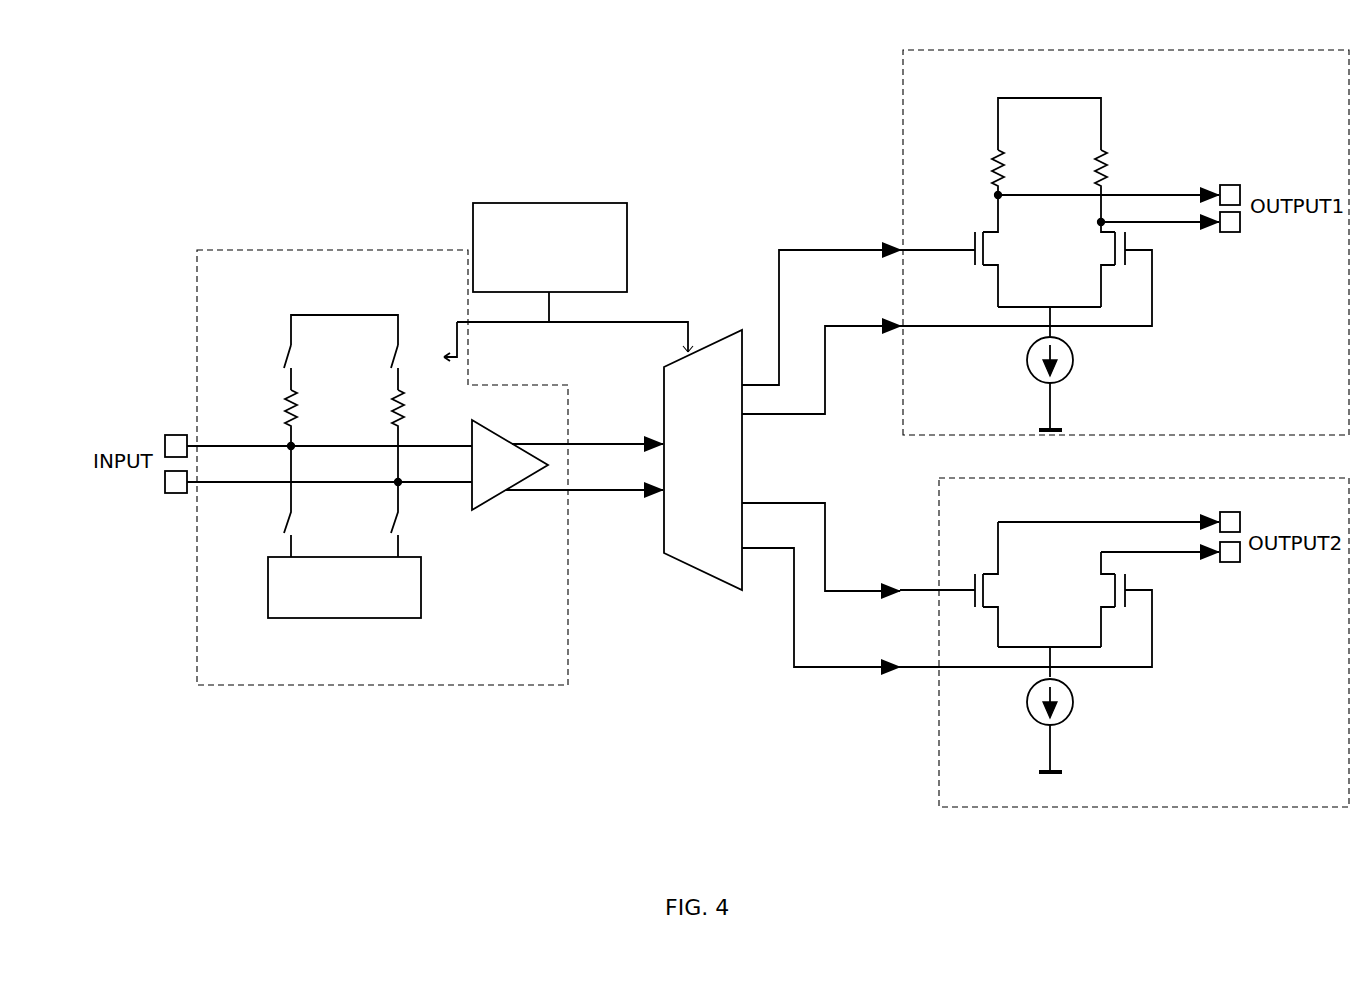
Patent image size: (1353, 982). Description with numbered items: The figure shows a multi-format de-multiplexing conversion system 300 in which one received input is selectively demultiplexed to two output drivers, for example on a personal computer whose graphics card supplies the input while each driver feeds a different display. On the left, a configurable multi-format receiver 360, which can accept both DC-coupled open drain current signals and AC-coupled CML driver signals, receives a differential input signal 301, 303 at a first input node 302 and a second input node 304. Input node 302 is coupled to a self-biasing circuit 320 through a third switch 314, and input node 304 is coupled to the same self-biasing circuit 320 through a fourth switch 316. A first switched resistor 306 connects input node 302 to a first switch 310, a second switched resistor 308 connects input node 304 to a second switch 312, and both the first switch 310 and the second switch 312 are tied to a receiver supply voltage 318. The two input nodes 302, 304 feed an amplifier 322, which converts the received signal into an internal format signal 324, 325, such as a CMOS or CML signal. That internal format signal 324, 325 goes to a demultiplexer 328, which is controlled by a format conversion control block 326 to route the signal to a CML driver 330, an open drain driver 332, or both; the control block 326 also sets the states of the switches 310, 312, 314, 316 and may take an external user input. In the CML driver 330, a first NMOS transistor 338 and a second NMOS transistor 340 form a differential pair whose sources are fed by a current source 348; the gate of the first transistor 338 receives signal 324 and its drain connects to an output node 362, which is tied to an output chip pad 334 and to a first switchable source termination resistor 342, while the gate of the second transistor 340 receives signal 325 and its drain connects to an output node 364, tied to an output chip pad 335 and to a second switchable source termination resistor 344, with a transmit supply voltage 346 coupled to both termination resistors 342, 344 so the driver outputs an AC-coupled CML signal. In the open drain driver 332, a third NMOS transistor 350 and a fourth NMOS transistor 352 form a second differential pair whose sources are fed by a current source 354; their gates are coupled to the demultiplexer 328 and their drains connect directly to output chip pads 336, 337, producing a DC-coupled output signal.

The multi-format de-multiplexing conversion system 300 is at (663, 46).
The differential input signal 301 is at (163, 447).
The first input node 302 is at (289, 444).
The differential input signal 303 is at (163, 477).
The second input node 304 is at (396, 480).
The switched resistor RT1 306 is at (314, 418).
The switched resistor RT2 308 is at (422, 436).
The switch S1 310 is at (313, 368).
The switch S2 312 is at (419, 368).
The switch S3 314 is at (313, 501).
The switch S4 316 is at (418, 519).
The supply voltage VRX 318 is at (350, 317).
The self-biasing circuit 320 is at (353, 618).
The amplifier 322 is at (510, 465).
The internal format signal 324 is at (706, 407).
The internal format signal 325 is at (703, 485).
The format conversion control block 326 is at (627, 248).
The demultiplexer 328 is at (703, 460).
The CML driver 330 is at (1152, 50).
The open drain driver 332 is at (1152, 807).
The output chip pad DON 334 is at (1240, 192).
The output chip pad DOP 335 is at (1240, 232).
The output chip pad DON 336 is at (1240, 514).
The output chip pad DOP 337 is at (1240, 558).
The NMOS transistor M1 338 is at (971, 251).
The NMOS transistor M2 340 is at (1026, 274).
The switchable source termination resistor RTa 342 is at (1019, 172).
The switchable source termination resistor RTb 344 is at (1121, 186).
The supply voltage VTX 346 is at (1050, 111).
The current source Isink 348 is at (1057, 368).
The NMOS transistor M3 350 is at (970, 584).
The NMOS transistor M4 352 is at (1026, 609).
The current source Isink 354 is at (1059, 709).
The configurable multi-format receiver 360 is at (398, 685).
The output node 362 is at (996, 194).
The output node 364 is at (1103, 223).